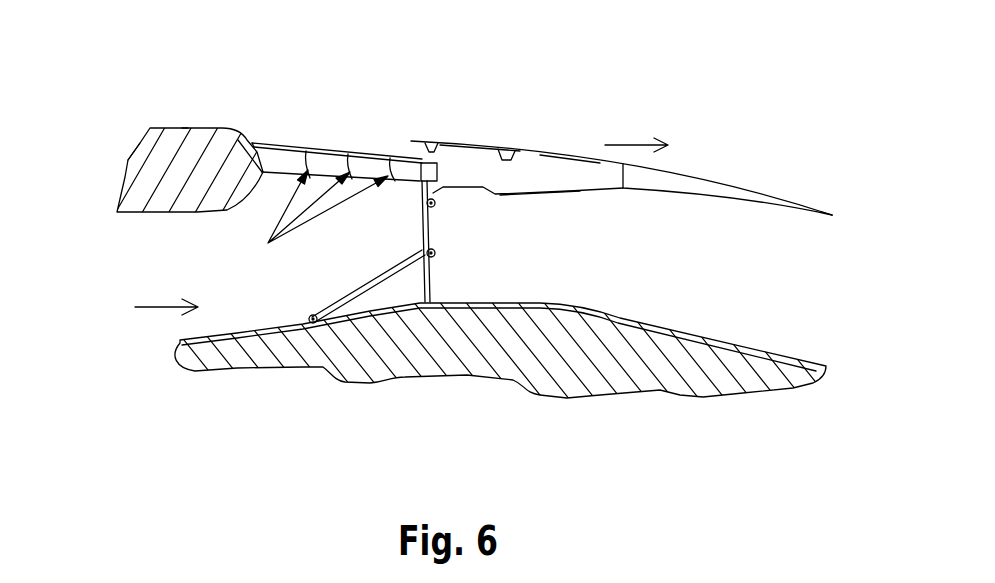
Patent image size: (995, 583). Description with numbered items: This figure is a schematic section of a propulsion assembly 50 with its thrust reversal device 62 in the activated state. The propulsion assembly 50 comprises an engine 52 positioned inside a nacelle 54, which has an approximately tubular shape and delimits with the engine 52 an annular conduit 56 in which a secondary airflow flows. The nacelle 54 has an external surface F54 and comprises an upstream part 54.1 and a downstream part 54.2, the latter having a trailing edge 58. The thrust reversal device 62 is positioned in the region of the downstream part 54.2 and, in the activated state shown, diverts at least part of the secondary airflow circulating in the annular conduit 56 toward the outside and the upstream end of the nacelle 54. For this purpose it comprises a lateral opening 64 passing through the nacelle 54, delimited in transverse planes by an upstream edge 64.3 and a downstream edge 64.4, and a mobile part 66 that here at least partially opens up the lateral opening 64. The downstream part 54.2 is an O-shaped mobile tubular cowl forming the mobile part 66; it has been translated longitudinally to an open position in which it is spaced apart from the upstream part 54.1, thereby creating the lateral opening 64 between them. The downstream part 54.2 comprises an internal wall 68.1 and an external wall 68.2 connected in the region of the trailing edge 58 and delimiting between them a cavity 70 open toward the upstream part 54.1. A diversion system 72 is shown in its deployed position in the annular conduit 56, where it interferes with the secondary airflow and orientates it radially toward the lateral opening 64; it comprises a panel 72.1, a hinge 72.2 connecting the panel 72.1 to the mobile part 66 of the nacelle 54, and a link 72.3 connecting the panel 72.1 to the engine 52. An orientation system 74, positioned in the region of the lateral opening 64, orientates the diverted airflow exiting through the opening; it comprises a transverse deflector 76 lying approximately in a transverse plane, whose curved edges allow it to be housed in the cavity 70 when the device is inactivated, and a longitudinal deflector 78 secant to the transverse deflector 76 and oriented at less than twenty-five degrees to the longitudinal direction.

The propulsion assembly 50 is at (86, 121).
The engine 52 is at (700, 402).
The nacelle 54 is at (162, 116).
The upstream part 54.1 is at (175, 180).
The downstream part 54.2 is at (540, 152).
The external surface F54 is at (184, 128).
The annular conduit 56 is at (174, 265).
The trailing edge 58 is at (835, 213).
The thrust reversal device 62 is at (356, 112).
The lateral opening 64 is at (314, 125).
The upstream edge 64.3 is at (265, 143).
The downstream edge 64.4 is at (420, 161).
The mobile part 66 is at (686, 159).
The internal wall 68.1 is at (572, 192).
The external wall 68.2 is at (482, 146).
The cavity 70 is at (559, 169).
The diversion system 72 is at (391, 252).
The panel 72.1 is at (420, 228).
The hinge 72.2 is at (437, 205).
The link 72.3 is at (352, 293).
The orientation system 74 is at (250, 225).
The transverse deflector 76 is at (319, 221).
The longitudinal deflector 78 is at (283, 128).